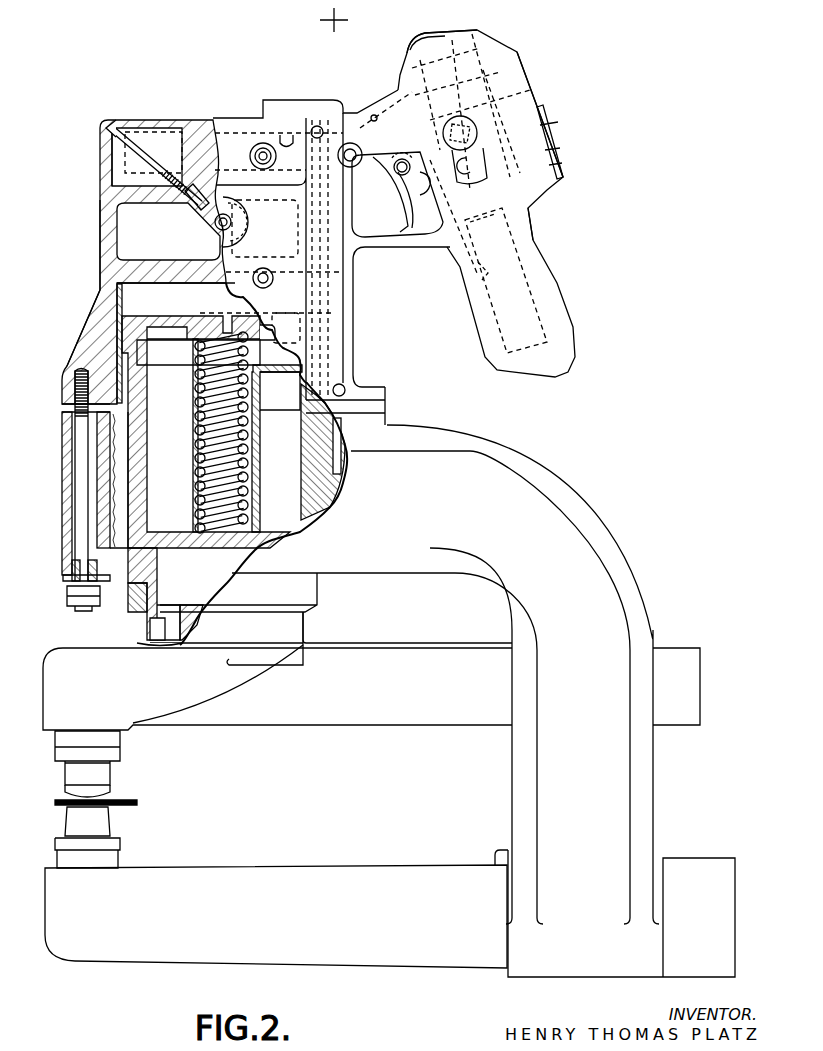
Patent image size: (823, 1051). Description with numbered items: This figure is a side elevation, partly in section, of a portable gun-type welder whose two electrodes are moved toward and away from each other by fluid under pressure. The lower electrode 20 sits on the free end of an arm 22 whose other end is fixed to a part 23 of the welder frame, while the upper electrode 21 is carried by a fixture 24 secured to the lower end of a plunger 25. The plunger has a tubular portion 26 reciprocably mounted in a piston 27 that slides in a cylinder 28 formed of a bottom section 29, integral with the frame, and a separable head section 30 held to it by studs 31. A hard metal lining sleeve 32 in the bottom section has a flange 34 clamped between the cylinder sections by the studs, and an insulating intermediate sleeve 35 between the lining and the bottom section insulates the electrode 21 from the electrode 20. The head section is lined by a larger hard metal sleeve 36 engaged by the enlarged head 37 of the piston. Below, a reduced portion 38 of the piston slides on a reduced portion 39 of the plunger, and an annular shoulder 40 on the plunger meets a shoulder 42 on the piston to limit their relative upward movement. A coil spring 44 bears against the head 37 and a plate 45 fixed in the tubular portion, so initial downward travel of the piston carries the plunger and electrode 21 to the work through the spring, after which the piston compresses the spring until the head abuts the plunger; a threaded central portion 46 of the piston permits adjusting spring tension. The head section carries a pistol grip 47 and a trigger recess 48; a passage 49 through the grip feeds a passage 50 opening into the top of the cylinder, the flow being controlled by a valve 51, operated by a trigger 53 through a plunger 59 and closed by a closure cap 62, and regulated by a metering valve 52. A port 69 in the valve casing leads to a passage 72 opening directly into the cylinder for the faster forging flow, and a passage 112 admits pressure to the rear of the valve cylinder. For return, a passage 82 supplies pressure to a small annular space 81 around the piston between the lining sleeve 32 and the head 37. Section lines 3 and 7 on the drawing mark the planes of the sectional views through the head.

The section line 3- 3 is at (55, 155).
The section line 7- 7 is at (294, 130).
The lower electrode 20 is at (70, 812).
The electrode 21 is at (72, 777).
The arm 22 is at (229, 882).
The part of the welder frame 23 is at (526, 795).
The fixture 24 is at (152, 712).
The plunger 25 is at (162, 555).
The tubular portion 26 is at (146, 458).
The piston 27 is at (136, 354).
The cylinder 28 is at (100, 290).
The bottom section 29 is at (64, 462).
The head section 30 is at (74, 350).
The studs 31 is at (76, 384).
The lining sleeve 32 is at (128, 536).
The flange 34 is at (62, 408).
The intermediate sleeve 35 is at (112, 441).
The hard metal sleeve 36 is at (122, 289).
The enlarged head 37 is at (137, 322).
The reduced portion 38 is at (158, 603).
The reduced portion 39 is at (150, 642).
The annular shoulder 40 is at (118, 588).
The shoulder 42 is at (150, 592).
The coil spring 44 is at (246, 420).
The plate 45 is at (268, 531).
The central portion 46 is at (216, 318).
The pistol grip 47 is at (526, 240).
The trigger recess 48 is at (420, 226).
The passage 49 is at (476, 288).
The passage 50 is at (358, 110).
The valve 51 is at (531, 207).
The metering valve 52 is at (412, 76).
The trigger 53 is at (398, 195).
The plunger 59 is at (428, 190).
The closure cap 62 is at (559, 143).
The port 69 is at (263, 143).
The passage 72 is at (262, 236).
The annular space 81 is at (125, 358).
The fluid pressure supply passage 82 is at (345, 273).
The passage 112 is at (534, 97).